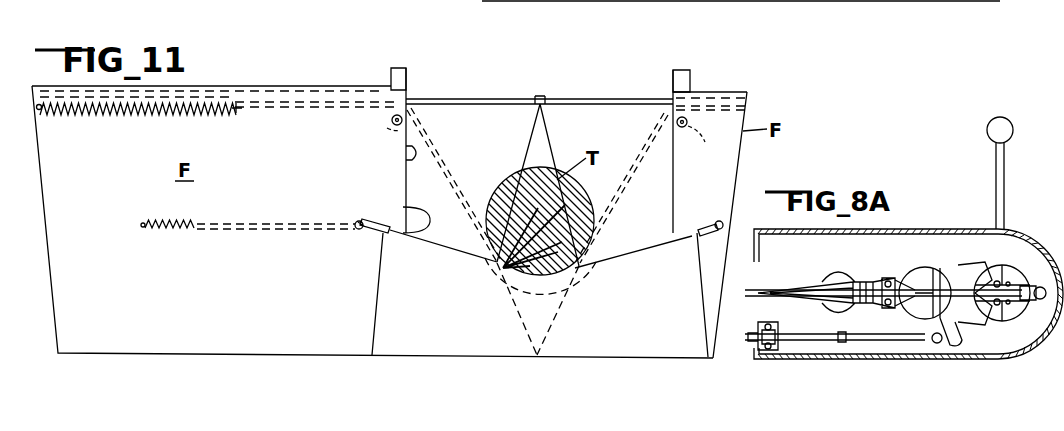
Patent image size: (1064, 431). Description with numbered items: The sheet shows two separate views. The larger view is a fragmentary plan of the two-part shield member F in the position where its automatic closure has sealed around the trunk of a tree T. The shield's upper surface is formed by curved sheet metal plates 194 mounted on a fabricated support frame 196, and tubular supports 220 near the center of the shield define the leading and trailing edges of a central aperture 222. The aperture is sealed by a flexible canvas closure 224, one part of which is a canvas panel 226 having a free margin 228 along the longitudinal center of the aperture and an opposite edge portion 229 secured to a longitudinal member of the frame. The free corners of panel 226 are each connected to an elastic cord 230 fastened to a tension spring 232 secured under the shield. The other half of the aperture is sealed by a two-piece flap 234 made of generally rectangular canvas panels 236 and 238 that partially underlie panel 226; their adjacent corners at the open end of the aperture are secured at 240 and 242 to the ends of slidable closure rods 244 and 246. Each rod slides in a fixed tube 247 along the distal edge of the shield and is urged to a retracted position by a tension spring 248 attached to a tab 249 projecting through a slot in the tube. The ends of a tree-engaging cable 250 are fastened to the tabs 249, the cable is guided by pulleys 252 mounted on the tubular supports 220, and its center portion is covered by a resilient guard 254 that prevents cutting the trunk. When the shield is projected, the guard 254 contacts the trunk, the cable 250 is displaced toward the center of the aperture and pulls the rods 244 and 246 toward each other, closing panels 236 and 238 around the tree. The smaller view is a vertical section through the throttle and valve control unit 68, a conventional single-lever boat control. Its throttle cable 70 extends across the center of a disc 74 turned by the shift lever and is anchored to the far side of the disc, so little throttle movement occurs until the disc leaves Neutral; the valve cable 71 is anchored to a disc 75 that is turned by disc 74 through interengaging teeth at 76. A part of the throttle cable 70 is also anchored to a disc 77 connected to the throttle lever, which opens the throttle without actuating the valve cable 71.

In FIG. 11, the support frame 196 is at (401, 55).
In FIG. 11, the tubular supports 220 is at (408, 70).
In FIG. 11, the central aperture 222 is at (406, 158).
In FIG. 11, the canvas closure 224 is at (578, 113).
In FIG. 11, the canvas panel 226 is at (458, 327).
In FIG. 11, the free margin 228 is at (403, 208).
In FIG. 11, the edge portion 229 is at (483, 0).
In FIG. 11, the elastic cord 230 is at (360, 237).
In FIG. 11, the tension spring 232 is at (165, 232).
In FIG. 11, the two-piece flap 234 is at (432, 110).
In FIG. 11, the canvas panel 236 is at (630, 140).
In FIG. 11, the canvas panel 238 is at (490, 162).
In FIG. 11, the securing point 240 is at (540, 100).
In FIG. 11, the securing point 242 is at (540, 100).
In FIG. 11, the closure rod 244 is at (659, 100).
In FIG. 11, the closure rod 246 is at (456, 95).
In FIG. 11, the fixed tube 247 is at (299, 88).
In FIG. 11, the tension spring 248 is at (175, 113).
In FIG. 11, the tab 249 is at (240, 110).
In FIG. 11, the tree-engaging cable 250 is at (303, 118).
In FIG. 11, the pulleys 252 is at (390, 127).
In FIG. 11, the resilient guard 254 is at (575, 288).
In FIG. 11, the curved sheet metal plates 194 is at (228, 311).
In FIG. 8A, the throttle and valve control unit 68 is at (943, 370).
In FIG. 8A, the throttle cable 70 is at (745, 290).
In FIG. 8A, the valve cable 71 is at (750, 340).
In FIG. 8A, the disc 74 is at (997, 250).
In FIG. 8A, the disc 75 is at (925, 268).
In FIG. 8A, the interengaging teeth 76 is at (968, 282).
In FIG. 8A, the disc 77 is at (855, 275).